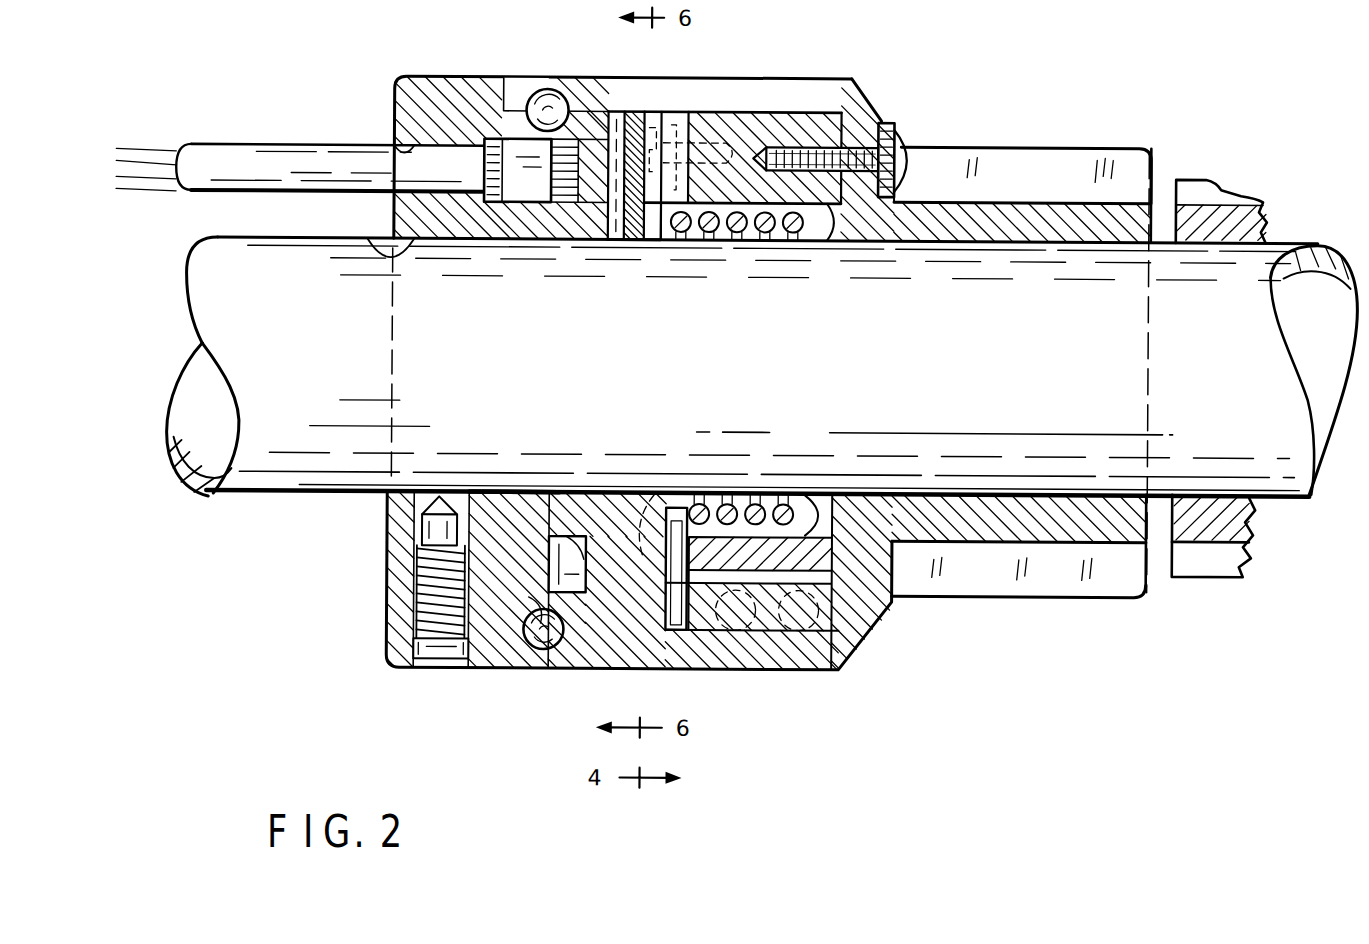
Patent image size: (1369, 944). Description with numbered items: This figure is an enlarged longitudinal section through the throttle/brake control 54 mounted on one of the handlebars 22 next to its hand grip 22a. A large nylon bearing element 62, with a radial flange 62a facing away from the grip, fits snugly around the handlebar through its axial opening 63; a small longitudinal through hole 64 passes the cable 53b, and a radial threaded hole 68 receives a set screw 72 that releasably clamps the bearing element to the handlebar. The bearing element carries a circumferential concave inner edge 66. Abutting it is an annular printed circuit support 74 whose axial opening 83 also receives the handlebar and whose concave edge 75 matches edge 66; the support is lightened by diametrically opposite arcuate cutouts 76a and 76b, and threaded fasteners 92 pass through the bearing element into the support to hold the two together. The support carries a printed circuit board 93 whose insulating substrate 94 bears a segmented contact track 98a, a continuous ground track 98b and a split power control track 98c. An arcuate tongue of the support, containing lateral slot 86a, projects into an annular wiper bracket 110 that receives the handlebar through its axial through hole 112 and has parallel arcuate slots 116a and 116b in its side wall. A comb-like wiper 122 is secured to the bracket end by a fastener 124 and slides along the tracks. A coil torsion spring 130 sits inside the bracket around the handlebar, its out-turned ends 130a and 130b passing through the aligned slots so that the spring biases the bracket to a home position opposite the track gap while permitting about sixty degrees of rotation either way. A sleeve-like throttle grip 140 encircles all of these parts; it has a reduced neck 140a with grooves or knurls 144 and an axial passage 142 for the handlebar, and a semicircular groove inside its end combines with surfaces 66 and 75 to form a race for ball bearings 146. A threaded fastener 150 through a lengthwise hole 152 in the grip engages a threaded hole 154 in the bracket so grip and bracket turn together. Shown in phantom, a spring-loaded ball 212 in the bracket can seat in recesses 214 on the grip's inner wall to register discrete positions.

The handlebar 22 is at (278, 497).
The hand grip 22a is at (1258, 562).
The cable 53b is at (208, 145).
The throttle/brake control 54 is at (344, 96).
The bearing element 62 is at (529, 90).
The radial flange 62a is at (436, 78).
The axial opening 63 is at (385, 242).
The longitudinal through hole 64 is at (397, 150).
The circumferential concave inner edge 66 is at (531, 602).
The radial threaded hole 68 is at (410, 618).
The set screw 72 is at (455, 671).
The printed circuit support 74 is at (557, 95).
The concave edge 75 is at (582, 671).
The arcuate cutout 76a is at (600, 182).
The arcuate cutout 76b is at (580, 486).
The axial opening 83 is at (515, 479).
The lateral slot 86a is at (650, 477).
The threaded fastener 92 is at (537, 196).
The printed circuit board 93 is at (634, 248).
The insulating substrate 94 is at (586, 162).
The segmented contact track 98a is at (616, 110).
The continuous ground track 98b is at (617, 162).
The split power control track 98c is at (641, 224).
The wiper bracket 110 is at (690, 112).
The axial through hole 112 is at (829, 212).
The arcuate slot 116a is at (666, 603).
The arcuate slot 116b is at (870, 623).
The comb-like wiper 122 is at (649, 112).
The fastener 124 is at (717, 108).
The coil torsion spring 130 is at (780, 233).
The spring end 130a is at (672, 642).
The spring end 130b is at (831, 486).
The throttle grip 140 is at (806, 86).
The neck 140a is at (1021, 159).
The axial passage 142 is at (1045, 243).
The grooves or knurls 144 is at (1150, 183).
The ball bearings 146 is at (520, 671).
The threaded fastener 150 is at (906, 159).
The lengthwise hole 152 is at (886, 123).
The threaded hole 154 is at (792, 140).
The spring-loaded ball 212 is at (796, 668).
The recesses 214 is at (735, 682).